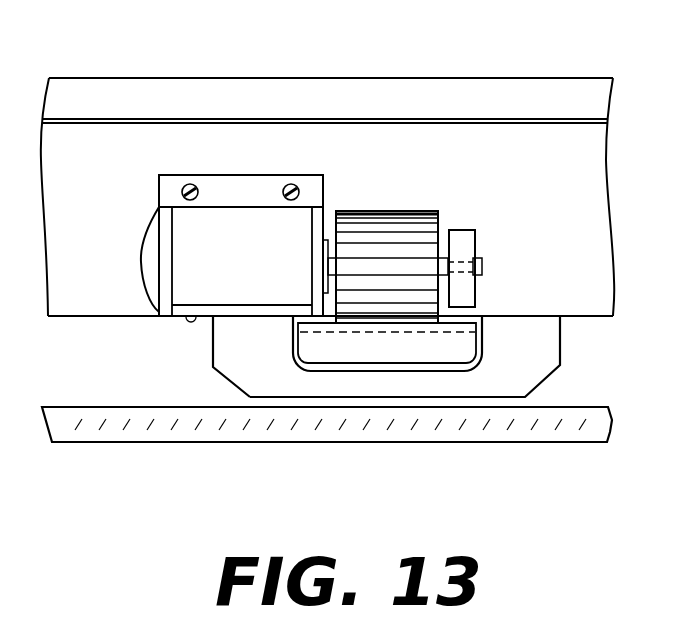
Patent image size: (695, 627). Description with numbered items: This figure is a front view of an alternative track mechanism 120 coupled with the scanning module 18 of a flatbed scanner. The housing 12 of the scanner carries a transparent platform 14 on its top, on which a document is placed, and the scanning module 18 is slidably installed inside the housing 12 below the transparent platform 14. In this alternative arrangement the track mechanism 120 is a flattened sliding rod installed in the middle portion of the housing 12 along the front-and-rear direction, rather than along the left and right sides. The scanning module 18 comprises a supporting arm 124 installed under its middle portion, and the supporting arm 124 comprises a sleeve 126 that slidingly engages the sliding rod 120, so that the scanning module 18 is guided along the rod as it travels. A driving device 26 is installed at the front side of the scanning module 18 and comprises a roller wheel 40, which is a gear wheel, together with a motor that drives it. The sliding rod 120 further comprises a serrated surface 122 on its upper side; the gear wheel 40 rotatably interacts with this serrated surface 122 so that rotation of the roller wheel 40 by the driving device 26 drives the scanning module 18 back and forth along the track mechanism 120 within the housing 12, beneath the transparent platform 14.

The housing 12 is at (470, 430).
The transparent platform 14 is at (442, 93).
The scanning module 18 is at (581, 231).
The driving device 26 is at (340, 148).
The roller wheel 40 is at (432, 210).
The track mechanism 120 is at (318, 353).
The serrated surface 122 is at (382, 333).
The supporting arm 124 is at (548, 353).
The sleeve 126 is at (292, 351).